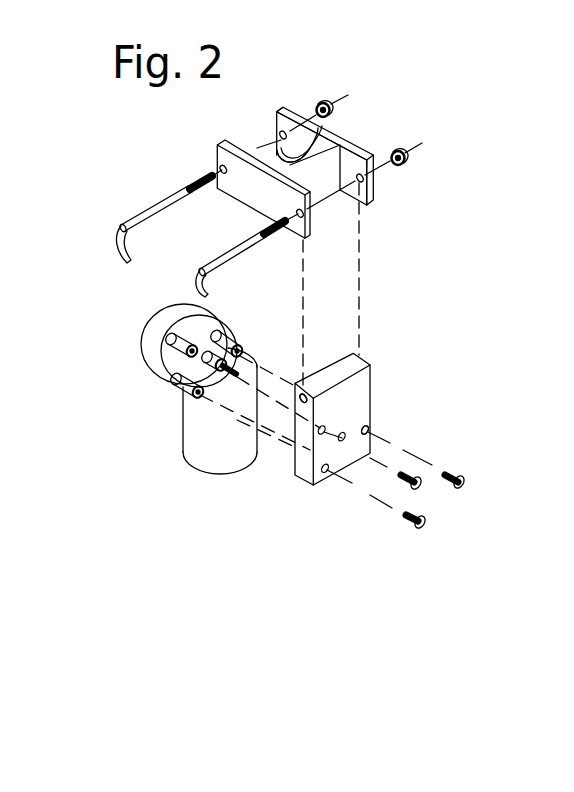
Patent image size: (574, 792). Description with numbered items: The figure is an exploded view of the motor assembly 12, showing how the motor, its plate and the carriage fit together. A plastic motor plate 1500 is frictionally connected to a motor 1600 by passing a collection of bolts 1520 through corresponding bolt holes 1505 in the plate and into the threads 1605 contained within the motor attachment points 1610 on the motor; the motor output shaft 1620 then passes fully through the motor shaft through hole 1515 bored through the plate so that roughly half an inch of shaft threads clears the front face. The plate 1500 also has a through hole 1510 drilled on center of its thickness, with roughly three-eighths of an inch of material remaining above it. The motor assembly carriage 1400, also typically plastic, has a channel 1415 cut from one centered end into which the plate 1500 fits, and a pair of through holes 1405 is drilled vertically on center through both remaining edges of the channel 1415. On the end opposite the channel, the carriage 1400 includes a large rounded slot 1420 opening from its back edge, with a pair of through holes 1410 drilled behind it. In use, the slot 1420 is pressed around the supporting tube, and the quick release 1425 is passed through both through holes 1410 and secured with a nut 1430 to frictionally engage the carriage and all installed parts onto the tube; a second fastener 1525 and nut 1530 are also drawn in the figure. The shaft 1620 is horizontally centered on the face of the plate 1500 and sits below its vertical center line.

The motor assembly 12 is at (412, 82).
The motor assembly carriage 1400 is at (295, 172).
The through holes 1405 is at (359, 174).
The through holes 1410 is at (282, 141).
The channel 1415 is at (323, 188).
The rounded slot 1420 is at (281, 142).
The quick release 1425 is at (167, 196).
The nut 1430 is at (337, 99).
The motor plate 1500 is at (332, 419).
The bolt holes 1505 is at (367, 428).
The through hole 1510 is at (305, 395).
The motor shaft through hole 1515 is at (340, 439).
The bolts 1520 is at (403, 515).
The hook bolt 1525 is at (250, 246).
The nut 1530 is at (397, 151).
The motor 1600 is at (199, 389).
The threads 1605 is at (176, 383).
The motor attachment points 1610 is at (170, 346).
The motor output shaft 1620 is at (226, 372).